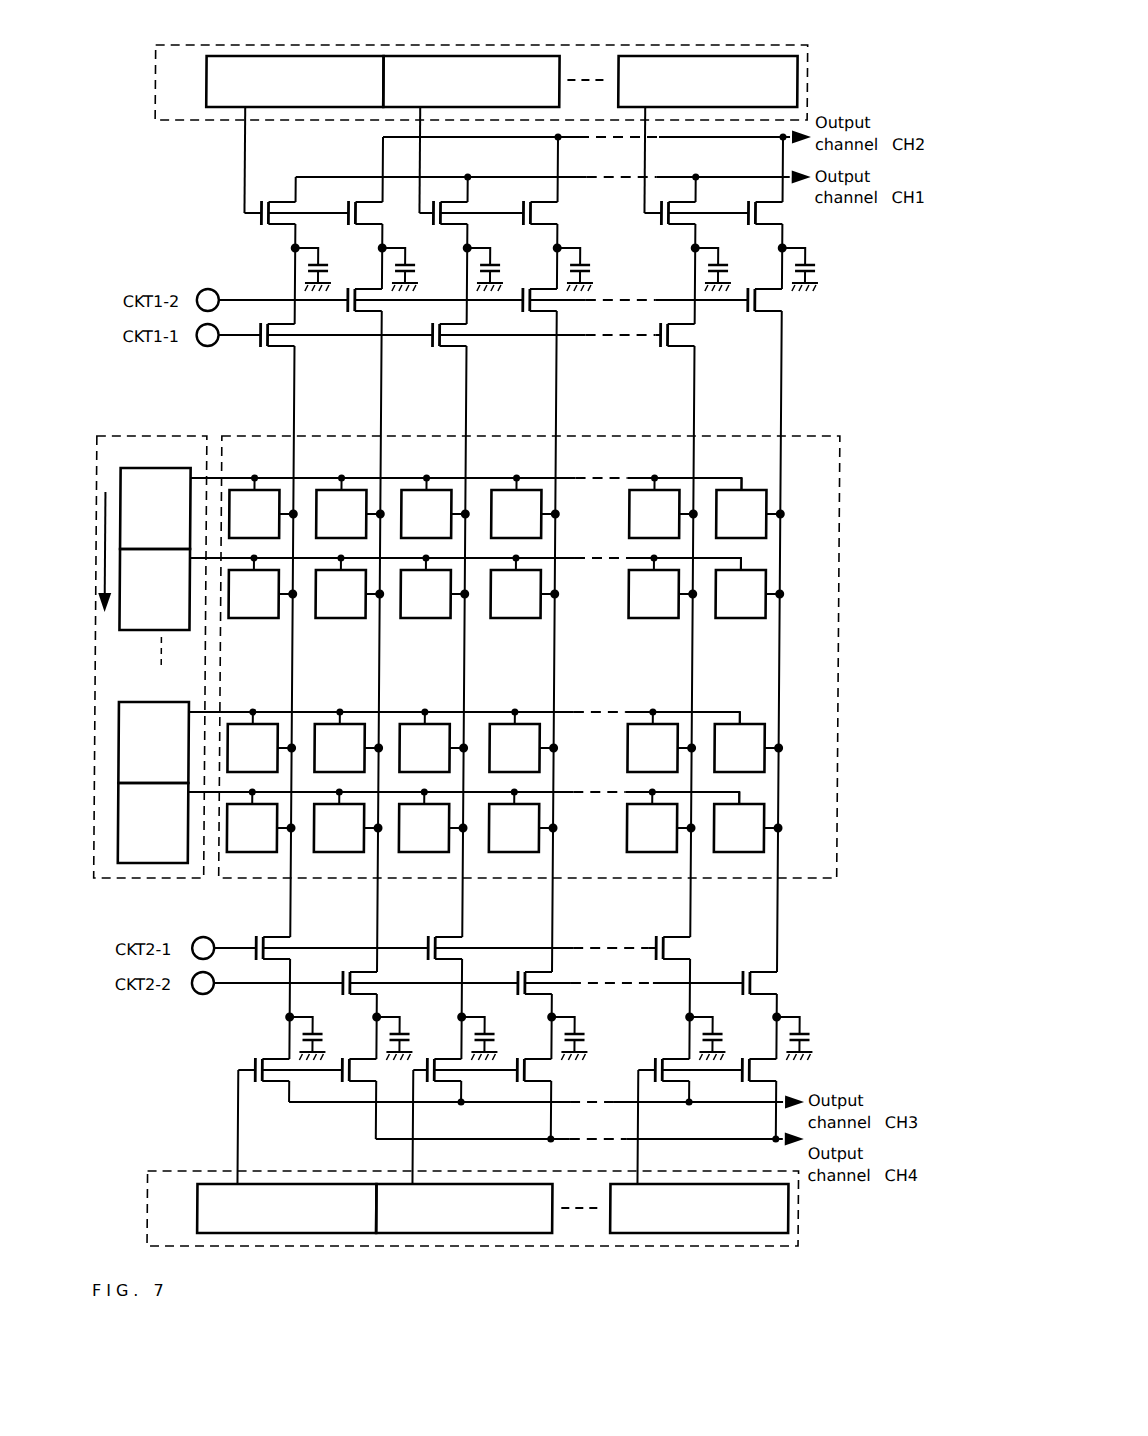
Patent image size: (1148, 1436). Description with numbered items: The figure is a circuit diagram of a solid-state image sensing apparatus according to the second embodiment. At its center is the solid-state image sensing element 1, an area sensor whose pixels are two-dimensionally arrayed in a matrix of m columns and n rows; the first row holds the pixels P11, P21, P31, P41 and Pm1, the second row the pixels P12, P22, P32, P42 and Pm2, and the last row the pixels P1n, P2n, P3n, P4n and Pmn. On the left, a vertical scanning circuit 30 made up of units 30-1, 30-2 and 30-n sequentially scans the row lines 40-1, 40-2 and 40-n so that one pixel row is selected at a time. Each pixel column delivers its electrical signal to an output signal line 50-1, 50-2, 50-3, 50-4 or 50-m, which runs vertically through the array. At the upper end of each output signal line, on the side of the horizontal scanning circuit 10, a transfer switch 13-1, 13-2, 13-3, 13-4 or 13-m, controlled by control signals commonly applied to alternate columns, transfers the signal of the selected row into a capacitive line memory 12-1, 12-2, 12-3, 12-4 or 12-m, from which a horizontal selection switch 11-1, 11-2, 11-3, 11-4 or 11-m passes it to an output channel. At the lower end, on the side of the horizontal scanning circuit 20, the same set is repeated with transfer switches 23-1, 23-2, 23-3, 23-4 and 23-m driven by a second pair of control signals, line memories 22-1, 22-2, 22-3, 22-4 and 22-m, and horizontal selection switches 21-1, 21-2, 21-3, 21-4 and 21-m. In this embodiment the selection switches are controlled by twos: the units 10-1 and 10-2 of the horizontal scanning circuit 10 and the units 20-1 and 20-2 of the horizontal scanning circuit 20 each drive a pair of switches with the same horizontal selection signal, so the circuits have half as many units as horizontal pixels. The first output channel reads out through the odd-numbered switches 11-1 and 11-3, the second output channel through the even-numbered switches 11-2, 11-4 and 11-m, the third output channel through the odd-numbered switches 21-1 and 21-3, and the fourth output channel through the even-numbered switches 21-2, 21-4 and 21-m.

The solid-state image sensing element 1 is at (843, 521).
The horizontal scanning circuit 10 is at (156, 80).
The unit of horizontal scanning circuit 10-1 is at (300, 56).
The unit of horizontal scanning circuit 10-2 is at (478, 56).
The horizontal selection switch 11-1 is at (268, 198).
The horizontal selection switch 11-2 is at (354, 198).
The horizontal selection switch 11-3 is at (440, 198).
The horizontal selection switch 11-4 is at (529, 198).
The horizontal selection switch 11-m is at (752, 226).
The line memory 12-1 is at (331, 264).
The line memory 12-2 is at (418, 264).
The line memory 12-3 is at (503, 264).
The line memory 12-4 is at (590, 280).
The line memory 12-m is at (820, 266).
The transfer switch 13-1 is at (300, 340).
The transfer switch 13-2 is at (382, 311).
The transfer switch 13-3 is at (470, 338).
The transfer switch 13-4 is at (559, 305).
The transfer switch 13-m is at (784, 302).
The horizontal scanning circuit 20 is at (163, 1171).
The unit of horizontal scanning circuit 20-1 is at (293, 1235).
The unit of horizontal scanning circuit 20-2 is at (451, 1235).
The horizontal selection switch 21-1 is at (258, 1082).
The horizontal selection switch 21-2 is at (345, 1082).
The horizontal selection switch 21-3 is at (432, 1082).
The horizontal selection switch 21-4 is at (546, 1072).
The horizontal selection switch 21-m is at (750, 1050).
The line memory 22-1 is at (329, 1034).
The line memory 22-2 is at (414, 1032).
The line memory 22-3 is at (499, 1033).
The line memory 22-4 is at (592, 1033).
The line memory 22-m is at (810, 1034).
The transfer switch 23-1 is at (288, 943).
The transfer switch 23-2 is at (372, 978).
The transfer switch 23-3 is at (461, 945).
The transfer switch 23-4 is at (549, 977).
The transfer switch 23-m is at (777, 980).
The vertical scanning circuit 30 is at (103, 434).
The unit of vertical scanning circuit 30-1 is at (168, 467).
The unit of vertical scanning circuit 30-2 is at (121, 614).
The unit of vertical scanning circuit 30-n is at (133, 866).
The line 40-1 is at (586, 482).
The line 40-2 is at (586, 562).
The line 40-n is at (580, 796).
The output signal line 50-1 is at (297, 405).
The output signal line 50-2 is at (384, 405).
The output signal line 50-3 is at (469, 405).
The output signal line 50-4 is at (559, 410).
The output signal line 50-m is at (784, 405).
The pixel P11 is at (273, 488).
The pixel P21 is at (358, 488).
The pixel P31 is at (445, 488).
The pixel P41 is at (533, 488).
The pixel Pm1 is at (760, 488).
The pixel P12 is at (257, 620).
The pixel P22 is at (344, 620).
The pixel P32 is at (430, 620).
The pixel P42 is at (518, 620).
The pixel Pm2 is at (742, 620).
The pixel P1n is at (256, 854).
The pixel P2n is at (344, 854).
The pixel P3n is at (428, 854).
The pixel P4n is at (513, 854).
The pixel Pmn is at (742, 854).